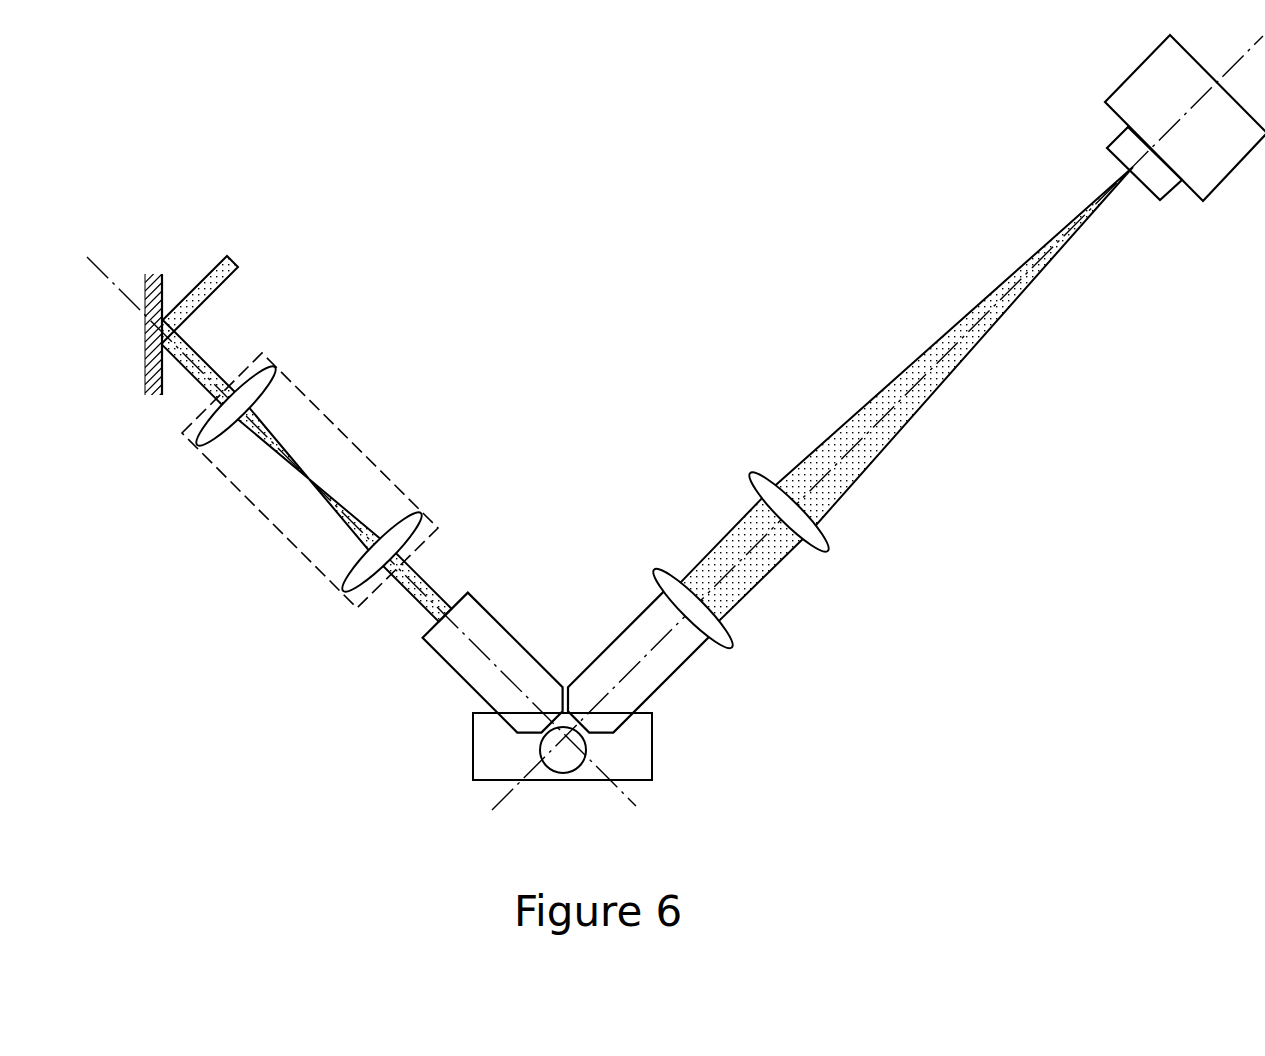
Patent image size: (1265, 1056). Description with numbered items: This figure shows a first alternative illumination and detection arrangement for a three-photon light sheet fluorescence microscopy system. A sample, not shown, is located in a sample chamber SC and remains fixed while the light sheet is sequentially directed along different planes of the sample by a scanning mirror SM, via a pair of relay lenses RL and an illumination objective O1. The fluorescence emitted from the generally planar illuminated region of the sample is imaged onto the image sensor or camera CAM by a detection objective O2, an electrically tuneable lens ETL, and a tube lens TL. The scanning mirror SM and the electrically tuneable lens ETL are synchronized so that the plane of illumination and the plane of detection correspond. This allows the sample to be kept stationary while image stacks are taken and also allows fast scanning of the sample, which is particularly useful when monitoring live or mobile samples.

The scanning mirror SM is at (120, 333).
The relay lenses RL is at (310, 480).
The illumination objective O1 is at (493, 663).
The detection objective O2 is at (641, 658).
The sample chamber SC is at (562, 766).
The electrically tuneable lens ETL is at (711, 625).
The tube lens TL is at (802, 527).
The camera CAM is at (1185, 142).